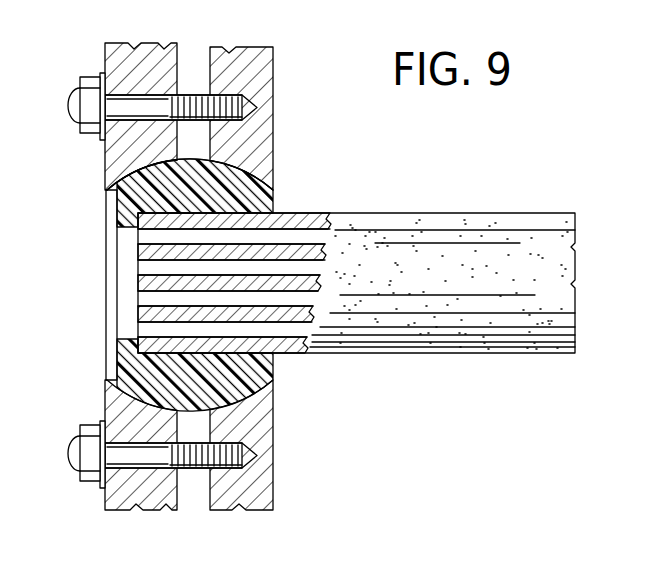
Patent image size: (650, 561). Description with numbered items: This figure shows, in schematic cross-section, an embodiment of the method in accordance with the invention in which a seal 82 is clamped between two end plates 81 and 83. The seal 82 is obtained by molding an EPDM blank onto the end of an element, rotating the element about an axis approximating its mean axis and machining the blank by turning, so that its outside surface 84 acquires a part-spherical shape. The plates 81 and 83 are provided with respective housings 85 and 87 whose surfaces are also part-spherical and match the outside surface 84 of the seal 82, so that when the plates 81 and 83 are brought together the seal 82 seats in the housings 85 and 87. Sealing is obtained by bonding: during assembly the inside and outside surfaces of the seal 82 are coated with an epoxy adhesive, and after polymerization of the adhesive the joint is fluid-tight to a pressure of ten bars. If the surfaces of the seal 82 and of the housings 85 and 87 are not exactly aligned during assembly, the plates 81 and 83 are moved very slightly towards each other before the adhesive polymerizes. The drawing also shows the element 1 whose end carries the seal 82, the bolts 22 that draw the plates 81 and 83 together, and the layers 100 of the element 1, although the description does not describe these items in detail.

The panel 1 is at (490, 240).
The bolt 22 is at (88, 83).
The plate 81 is at (248, 62).
The seal 82 is at (167, 188).
The plate 83 is at (143, 65).
The outside surface 84 is at (200, 411).
The housing 85 is at (245, 172).
The housing 87 is at (138, 163).
The panel layers 100 is at (320, 236).